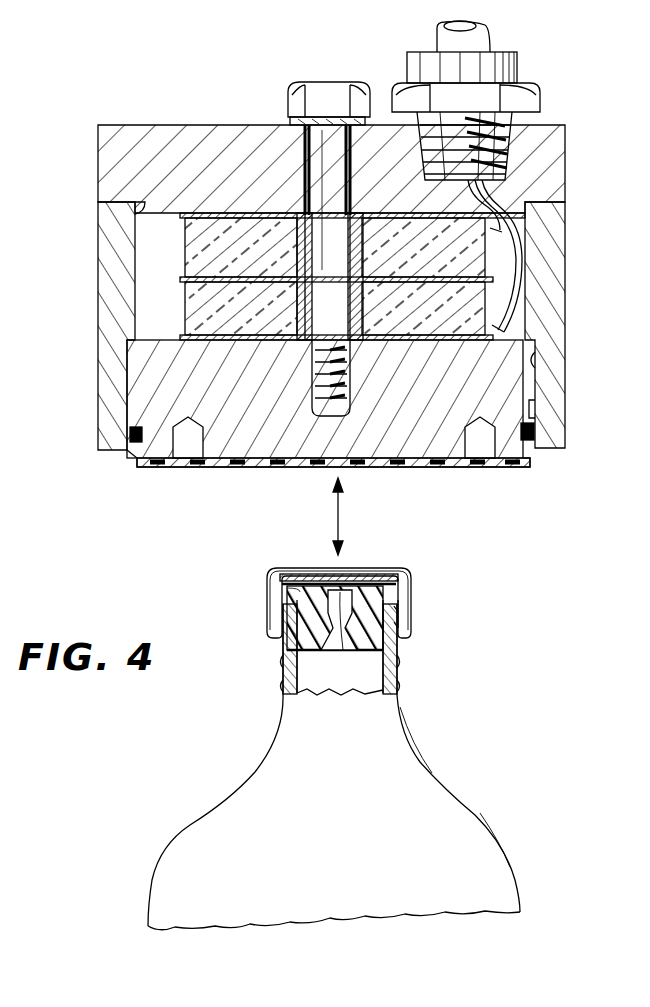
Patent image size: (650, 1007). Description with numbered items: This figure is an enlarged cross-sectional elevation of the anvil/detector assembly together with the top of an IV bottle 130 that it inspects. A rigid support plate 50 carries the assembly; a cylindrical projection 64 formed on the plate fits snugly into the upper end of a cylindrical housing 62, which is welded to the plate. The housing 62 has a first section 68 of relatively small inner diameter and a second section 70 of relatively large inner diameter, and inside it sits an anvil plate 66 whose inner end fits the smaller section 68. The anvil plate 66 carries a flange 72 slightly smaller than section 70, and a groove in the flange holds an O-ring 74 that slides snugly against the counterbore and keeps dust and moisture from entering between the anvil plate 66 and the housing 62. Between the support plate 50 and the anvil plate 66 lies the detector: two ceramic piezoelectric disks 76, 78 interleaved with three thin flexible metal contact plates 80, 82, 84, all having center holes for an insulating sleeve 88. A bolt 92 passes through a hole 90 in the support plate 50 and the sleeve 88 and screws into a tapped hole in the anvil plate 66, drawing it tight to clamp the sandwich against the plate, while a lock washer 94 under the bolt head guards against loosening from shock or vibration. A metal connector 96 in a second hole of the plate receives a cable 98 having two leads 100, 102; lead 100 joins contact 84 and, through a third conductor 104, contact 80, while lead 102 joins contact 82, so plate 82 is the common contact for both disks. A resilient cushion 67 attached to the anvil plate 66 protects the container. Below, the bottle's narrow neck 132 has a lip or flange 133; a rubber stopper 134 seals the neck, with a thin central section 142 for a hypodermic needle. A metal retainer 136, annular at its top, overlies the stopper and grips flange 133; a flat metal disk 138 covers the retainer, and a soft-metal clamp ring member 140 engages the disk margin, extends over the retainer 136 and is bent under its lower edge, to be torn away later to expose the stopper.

The support plate 50 is at (148, 135).
The cylindrical housing 62 is at (100, 300).
The cylindrical projection 64 is at (140, 219).
The anvil plate 66 is at (162, 383).
The cushion 67 is at (437, 467).
The first section 68 is at (515, 312).
The second section 70 is at (530, 363).
The flange 72 is at (530, 407).
The O-ring 74 is at (534, 432).
The piezoelectric disk 76 is at (198, 257).
The piezoelectric disk 78 is at (198, 300).
The contact plate 80 is at (137, 333).
The contact plate 82 is at (180, 277).
The contact plate 84 is at (197, 212).
The insulating sleeve 88 is at (275, 222).
The hole 90 is at (318, 148).
The bolt 92 is at (332, 88).
The lock washer 94 is at (372, 113).
The metal connector 96 is at (536, 98).
The cable 98 is at (477, 40).
The electrical lead 100 is at (500, 200).
The electrical lead 102 is at (500, 210).
The third conductor 104 is at (513, 276).
The bottle 130 is at (458, 790).
The neck 132 is at (400, 652).
The flange 133 is at (408, 613).
The rubber stopper 134 is at (305, 638).
The metal retainer 136 is at (405, 582).
The metal disk 138 is at (363, 573).
The clamp ring member 140 is at (270, 580).
The thin section 142 is at (342, 653).